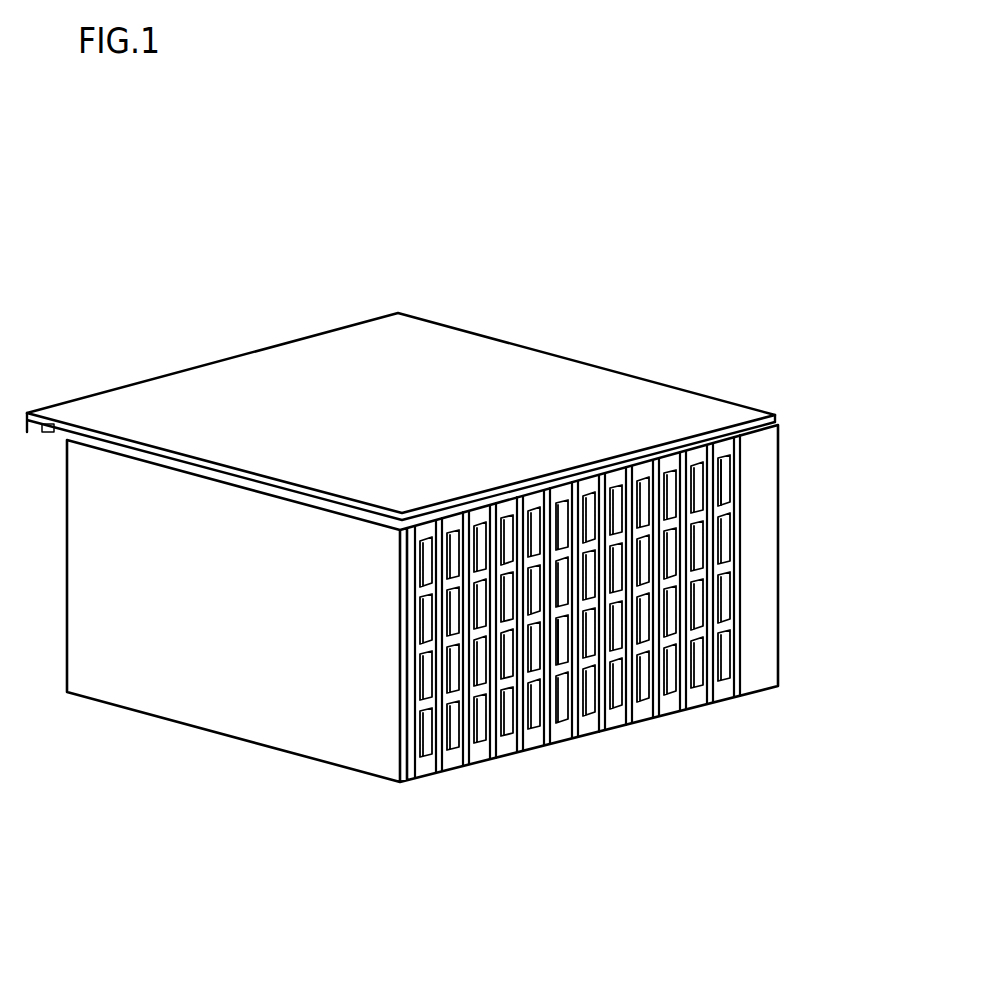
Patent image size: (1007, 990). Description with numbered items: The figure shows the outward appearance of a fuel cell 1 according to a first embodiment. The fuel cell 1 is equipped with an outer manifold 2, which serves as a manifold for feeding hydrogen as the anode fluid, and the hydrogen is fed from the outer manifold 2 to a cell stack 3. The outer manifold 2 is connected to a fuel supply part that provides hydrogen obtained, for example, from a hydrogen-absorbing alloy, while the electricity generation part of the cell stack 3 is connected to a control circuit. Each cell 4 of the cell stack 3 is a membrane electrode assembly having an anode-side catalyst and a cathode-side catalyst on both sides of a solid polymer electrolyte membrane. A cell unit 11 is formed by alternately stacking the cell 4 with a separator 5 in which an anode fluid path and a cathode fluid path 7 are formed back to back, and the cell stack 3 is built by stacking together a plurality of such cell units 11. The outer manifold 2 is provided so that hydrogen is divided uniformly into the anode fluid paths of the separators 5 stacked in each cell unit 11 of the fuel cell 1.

The fuel cell 1 is at (261, 325).
The outer manifold 2 is at (530, 373).
The cell stack 3 is at (228, 709).
The cell 4 is at (607, 640).
The separator 5 is at (727, 549).
The cathode fluid path 7 is at (666, 675).
The cell unit 11 is at (714, 490).